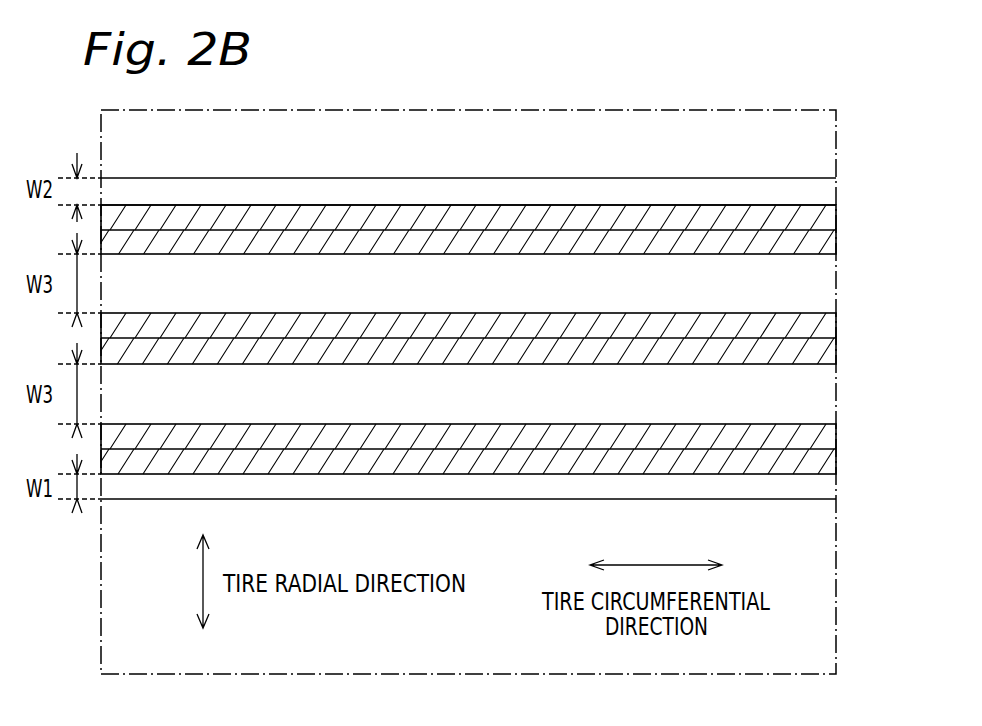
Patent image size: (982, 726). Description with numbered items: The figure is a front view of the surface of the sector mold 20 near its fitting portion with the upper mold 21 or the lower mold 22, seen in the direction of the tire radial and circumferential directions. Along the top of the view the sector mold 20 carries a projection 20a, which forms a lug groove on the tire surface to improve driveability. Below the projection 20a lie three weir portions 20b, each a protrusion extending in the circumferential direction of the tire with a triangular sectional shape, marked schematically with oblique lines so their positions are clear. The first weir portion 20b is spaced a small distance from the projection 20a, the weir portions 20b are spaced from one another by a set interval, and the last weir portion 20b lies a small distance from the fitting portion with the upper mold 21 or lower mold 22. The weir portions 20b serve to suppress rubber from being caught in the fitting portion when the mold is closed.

The sector mold 20 is at (521, 296).
The projection 20a is at (822, 158).
The weir portion 20b is at (836, 229).
The upper mold 21 is at (518, 392).
The lower mold 22 is at (822, 578).